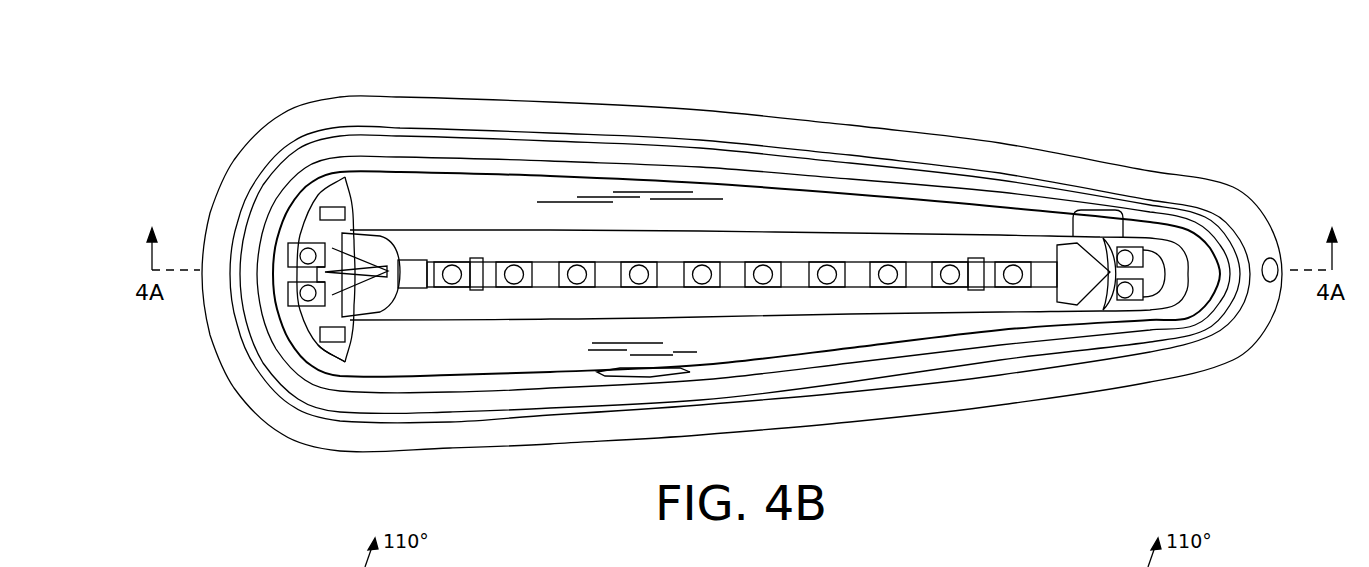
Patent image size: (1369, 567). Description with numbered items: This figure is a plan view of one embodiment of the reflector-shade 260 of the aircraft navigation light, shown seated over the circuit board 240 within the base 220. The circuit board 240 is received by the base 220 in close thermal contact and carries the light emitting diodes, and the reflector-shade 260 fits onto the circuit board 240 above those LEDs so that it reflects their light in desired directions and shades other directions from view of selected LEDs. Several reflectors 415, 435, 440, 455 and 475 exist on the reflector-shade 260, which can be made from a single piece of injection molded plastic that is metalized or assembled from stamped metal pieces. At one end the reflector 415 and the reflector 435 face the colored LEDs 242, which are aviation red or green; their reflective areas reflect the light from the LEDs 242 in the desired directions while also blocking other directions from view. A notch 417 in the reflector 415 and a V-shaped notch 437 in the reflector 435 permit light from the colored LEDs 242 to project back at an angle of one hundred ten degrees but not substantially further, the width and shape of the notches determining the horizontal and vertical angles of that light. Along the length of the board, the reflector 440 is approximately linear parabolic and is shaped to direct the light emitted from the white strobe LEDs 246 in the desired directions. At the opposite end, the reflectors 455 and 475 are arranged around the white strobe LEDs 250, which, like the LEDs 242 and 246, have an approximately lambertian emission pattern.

The base 220 is at (1010, 140).
The reflector-shade 260 is at (866, 191).
The reflector 440 is at (765, 248).
The notch 417 is at (320, 250).
The reflector 415 is at (305, 248).
The light emitting diodes 242 is at (300, 292).
The circuit board 240 is at (321, 356).
The reflector 435 is at (372, 248).
The V-shaped notch 437 is at (398, 303).
The light emitting diodes 246 is at (452, 284).
The reflector 455 is at (1075, 255).
The reflector 475 is at (1115, 262).
The light emitting diodes 250 is at (1186, 265).